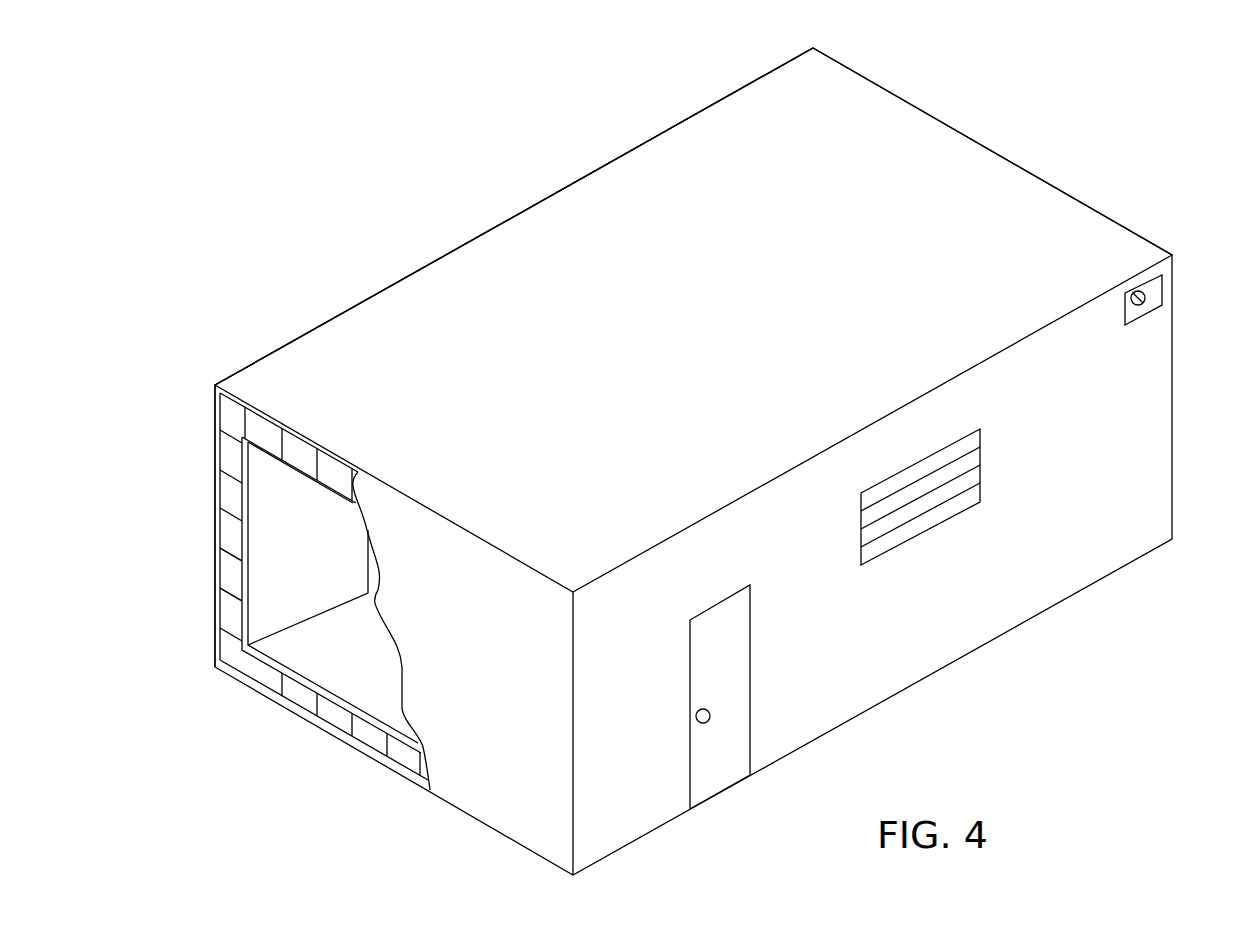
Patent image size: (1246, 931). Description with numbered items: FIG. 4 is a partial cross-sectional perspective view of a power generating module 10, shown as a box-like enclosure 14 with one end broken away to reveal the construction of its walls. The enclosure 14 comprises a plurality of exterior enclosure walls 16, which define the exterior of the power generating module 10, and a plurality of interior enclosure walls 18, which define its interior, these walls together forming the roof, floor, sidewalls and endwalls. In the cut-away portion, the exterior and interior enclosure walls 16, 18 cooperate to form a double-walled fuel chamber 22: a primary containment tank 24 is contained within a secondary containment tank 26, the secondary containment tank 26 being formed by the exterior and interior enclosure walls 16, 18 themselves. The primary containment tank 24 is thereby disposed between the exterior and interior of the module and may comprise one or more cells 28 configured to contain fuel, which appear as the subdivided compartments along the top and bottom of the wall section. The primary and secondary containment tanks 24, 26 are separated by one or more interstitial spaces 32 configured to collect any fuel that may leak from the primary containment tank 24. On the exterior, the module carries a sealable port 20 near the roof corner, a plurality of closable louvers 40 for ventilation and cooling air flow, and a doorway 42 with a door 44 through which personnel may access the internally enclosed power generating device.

The power generating module 10 is at (334, 117).
The enclosure 14 is at (637, 117).
The exterior enclosure walls 16 is at (377, 310).
The interior enclosure walls 18 is at (258, 535).
The sealable port 20 is at (1147, 298).
The fuel chamber 22 is at (225, 618).
The primary containment tank 24 is at (262, 589).
The secondary containment tank 26 is at (208, 441).
The cells 28 is at (268, 432).
The interstitial spaces 32 is at (215, 580).
The louvers 40 is at (975, 459).
The doorway 42 is at (692, 790).
The door 44 is at (740, 667).